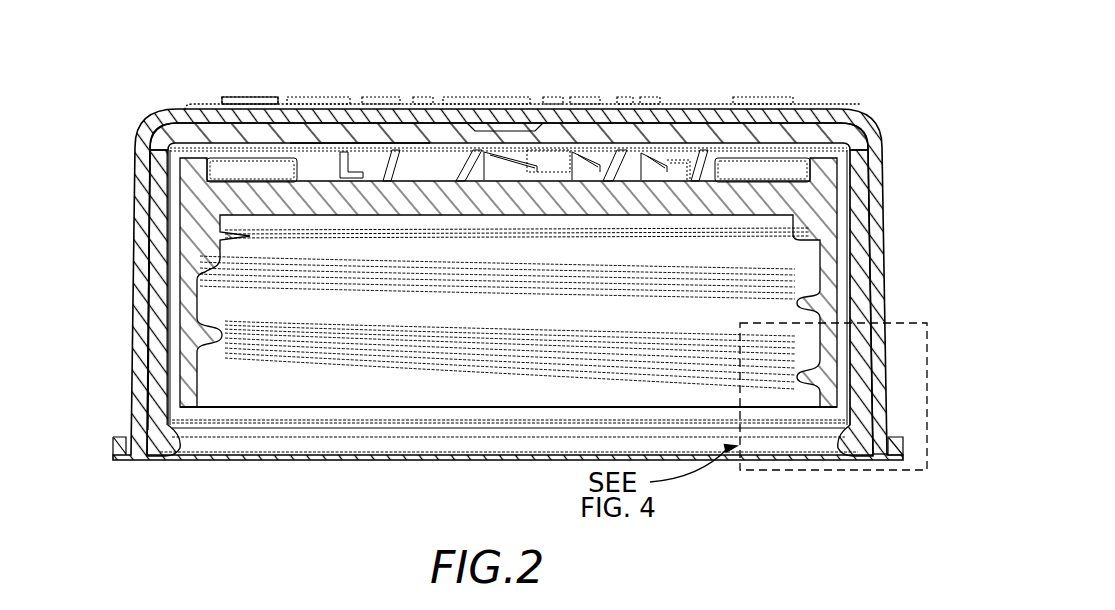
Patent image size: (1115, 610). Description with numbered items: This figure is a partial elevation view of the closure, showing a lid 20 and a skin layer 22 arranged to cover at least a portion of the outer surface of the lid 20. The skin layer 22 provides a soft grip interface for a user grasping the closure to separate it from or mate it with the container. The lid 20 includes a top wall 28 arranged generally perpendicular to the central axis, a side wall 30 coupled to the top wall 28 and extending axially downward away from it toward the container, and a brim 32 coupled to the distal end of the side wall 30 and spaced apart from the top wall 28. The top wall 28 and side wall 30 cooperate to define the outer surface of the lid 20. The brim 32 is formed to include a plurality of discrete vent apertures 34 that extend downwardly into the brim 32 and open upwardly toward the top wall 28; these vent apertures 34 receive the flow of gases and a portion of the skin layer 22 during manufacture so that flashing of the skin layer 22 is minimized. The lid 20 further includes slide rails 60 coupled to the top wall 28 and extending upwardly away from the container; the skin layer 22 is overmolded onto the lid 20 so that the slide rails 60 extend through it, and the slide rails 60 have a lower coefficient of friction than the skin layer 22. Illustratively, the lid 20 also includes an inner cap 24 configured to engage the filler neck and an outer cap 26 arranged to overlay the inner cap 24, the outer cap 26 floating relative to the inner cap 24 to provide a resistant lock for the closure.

The lid 20 is at (655, 128).
The skin layer 22 is at (690, 112).
The inner cap 24 is at (185, 343).
The outer cap 26 is at (153, 315).
The top wall 28 is at (355, 127).
The side wall 30 is at (857, 232).
The brim 32 is at (902, 447).
The vent apertures 34 is at (770, 548).
The slide rails 60 is at (282, 98).